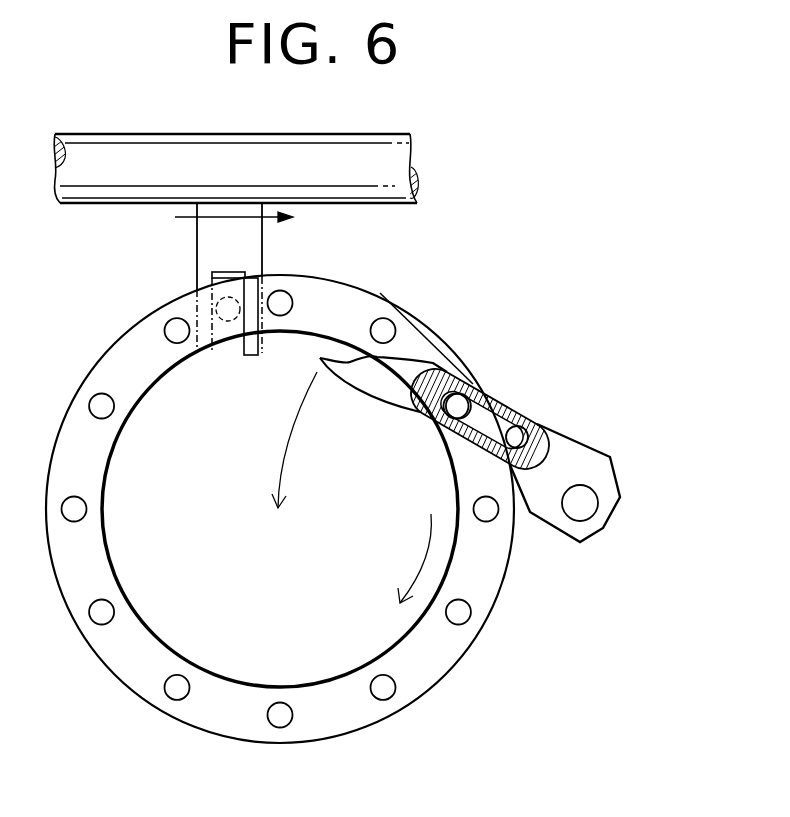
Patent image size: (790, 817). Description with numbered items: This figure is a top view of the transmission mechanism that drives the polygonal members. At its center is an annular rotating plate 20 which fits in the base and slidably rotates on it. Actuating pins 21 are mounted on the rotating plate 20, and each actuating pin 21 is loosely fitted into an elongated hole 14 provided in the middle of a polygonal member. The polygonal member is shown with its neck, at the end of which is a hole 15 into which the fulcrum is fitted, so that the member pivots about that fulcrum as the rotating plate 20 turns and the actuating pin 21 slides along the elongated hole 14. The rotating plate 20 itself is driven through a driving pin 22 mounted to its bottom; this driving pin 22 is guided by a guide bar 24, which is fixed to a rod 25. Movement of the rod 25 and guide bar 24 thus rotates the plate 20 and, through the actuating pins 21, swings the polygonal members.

The rod 25 is at (378, 168).
The guide bar 24 is at (195, 262).
The driving pin 22 is at (233, 322).
The annular rotating plate 20 is at (418, 341).
The actuating pin 21 is at (473, 385).
The elongated hole 14 is at (533, 418).
The hole 15 is at (583, 507).